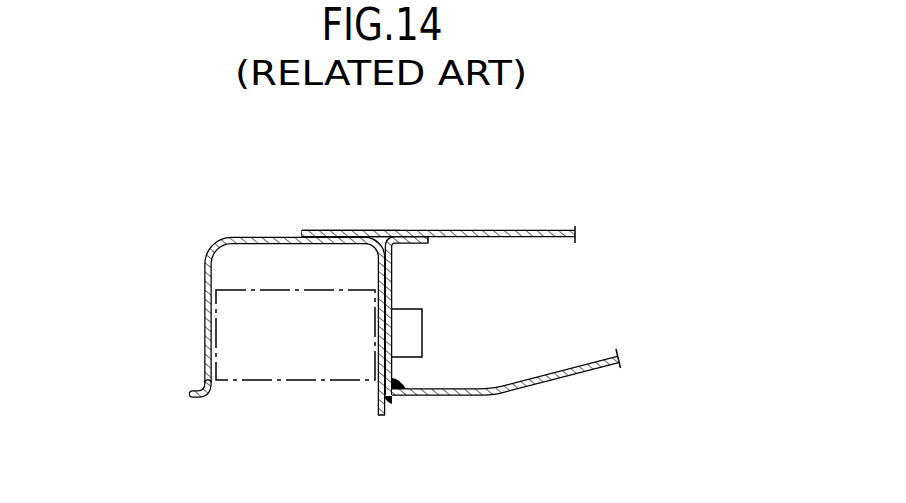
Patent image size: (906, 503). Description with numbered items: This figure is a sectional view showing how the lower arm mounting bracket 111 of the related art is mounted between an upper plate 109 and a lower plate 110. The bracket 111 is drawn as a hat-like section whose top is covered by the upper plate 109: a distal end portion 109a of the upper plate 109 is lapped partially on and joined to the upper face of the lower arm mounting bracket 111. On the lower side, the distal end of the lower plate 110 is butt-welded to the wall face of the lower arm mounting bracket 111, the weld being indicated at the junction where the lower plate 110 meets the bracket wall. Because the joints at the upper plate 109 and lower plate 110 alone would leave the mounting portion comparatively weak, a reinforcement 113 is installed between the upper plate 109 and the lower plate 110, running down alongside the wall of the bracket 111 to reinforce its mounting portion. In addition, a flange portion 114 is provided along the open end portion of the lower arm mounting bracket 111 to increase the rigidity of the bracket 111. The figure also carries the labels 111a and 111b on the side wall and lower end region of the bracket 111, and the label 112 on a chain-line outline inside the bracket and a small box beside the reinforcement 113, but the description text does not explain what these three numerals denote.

The upper plate 109 is at (525, 230).
The distal end portion of the upper plate 109a is at (330, 230).
The lower plate 110 is at (480, 396).
The lower arm mounting bracket 111 is at (233, 237).
The side wall of reinforcement member 111a is at (204, 278).
The lower end of reinforcement member 111b is at (381, 391).
The airbag module (phantom) 112 is at (205, 334).
The reinforcement 113 is at (393, 279).
The flange portion 114 is at (191, 398).